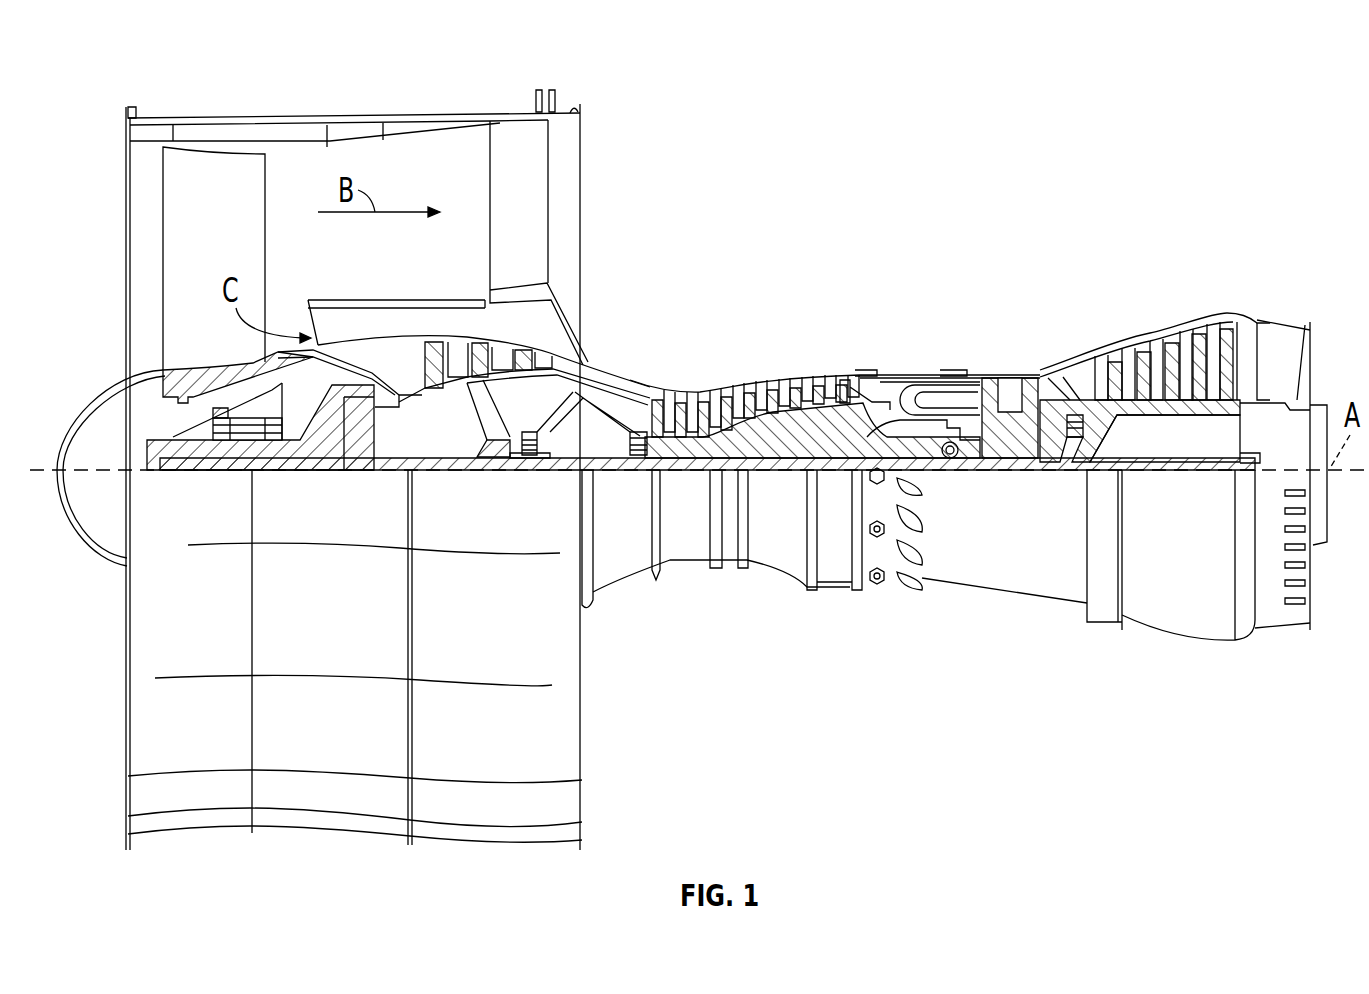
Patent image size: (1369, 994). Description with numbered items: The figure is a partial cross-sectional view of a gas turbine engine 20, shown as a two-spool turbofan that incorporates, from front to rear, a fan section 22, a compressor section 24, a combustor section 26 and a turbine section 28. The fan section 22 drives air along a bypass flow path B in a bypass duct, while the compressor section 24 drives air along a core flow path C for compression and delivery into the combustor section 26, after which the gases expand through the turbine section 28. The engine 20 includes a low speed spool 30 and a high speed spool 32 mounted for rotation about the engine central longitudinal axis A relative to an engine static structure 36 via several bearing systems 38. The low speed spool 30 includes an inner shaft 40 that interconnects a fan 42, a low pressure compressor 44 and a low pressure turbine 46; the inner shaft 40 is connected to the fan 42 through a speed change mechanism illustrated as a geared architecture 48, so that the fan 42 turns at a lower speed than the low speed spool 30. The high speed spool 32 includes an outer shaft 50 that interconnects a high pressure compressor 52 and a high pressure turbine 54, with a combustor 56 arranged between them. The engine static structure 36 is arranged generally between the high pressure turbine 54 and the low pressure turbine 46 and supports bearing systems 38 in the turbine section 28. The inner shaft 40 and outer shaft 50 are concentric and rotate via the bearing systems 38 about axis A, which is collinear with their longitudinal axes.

The gas turbine engine 20 is at (1138, 154).
The fan section 22 is at (233, 113).
The compressor section 24 is at (765, 336).
The combustor section 26 is at (931, 338).
The turbine section 28 is at (1072, 321).
The low speed spool 30 is at (796, 475).
The high speed spool 32 is at (850, 422).
The engine static structure 36 is at (838, 585).
The bearing systems 38 is at (222, 452).
The inner shaft 40 is at (598, 478).
The fan 42 is at (241, 247).
The low pressure compressor 44 is at (500, 356).
The low pressure turbine 46 is at (1172, 372).
The geared architecture 48 is at (356, 442).
The outer shaft 50 is at (958, 458).
The high pressure compressor 52 is at (757, 440).
The high pressure turbine 54 is at (1013, 385).
The combustor 56 is at (935, 395).